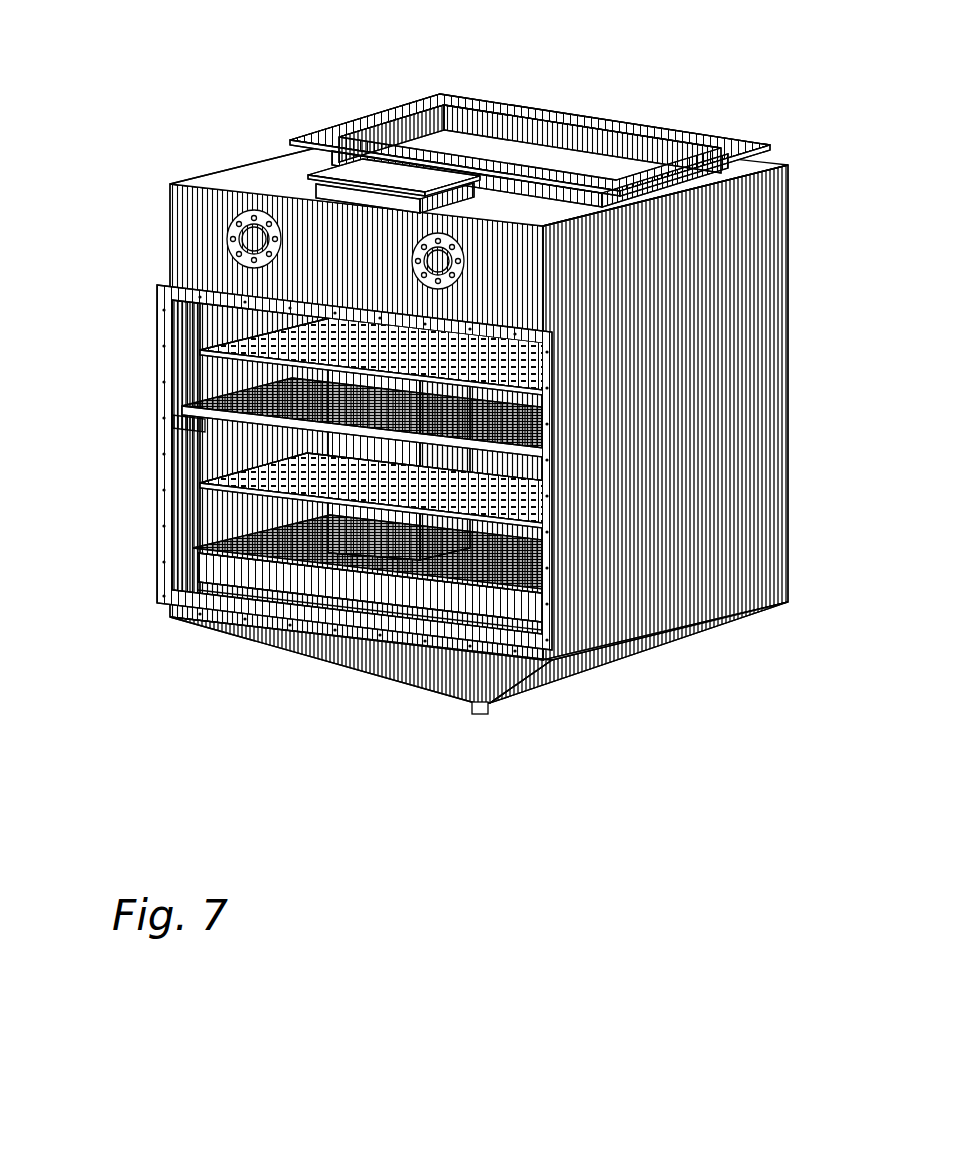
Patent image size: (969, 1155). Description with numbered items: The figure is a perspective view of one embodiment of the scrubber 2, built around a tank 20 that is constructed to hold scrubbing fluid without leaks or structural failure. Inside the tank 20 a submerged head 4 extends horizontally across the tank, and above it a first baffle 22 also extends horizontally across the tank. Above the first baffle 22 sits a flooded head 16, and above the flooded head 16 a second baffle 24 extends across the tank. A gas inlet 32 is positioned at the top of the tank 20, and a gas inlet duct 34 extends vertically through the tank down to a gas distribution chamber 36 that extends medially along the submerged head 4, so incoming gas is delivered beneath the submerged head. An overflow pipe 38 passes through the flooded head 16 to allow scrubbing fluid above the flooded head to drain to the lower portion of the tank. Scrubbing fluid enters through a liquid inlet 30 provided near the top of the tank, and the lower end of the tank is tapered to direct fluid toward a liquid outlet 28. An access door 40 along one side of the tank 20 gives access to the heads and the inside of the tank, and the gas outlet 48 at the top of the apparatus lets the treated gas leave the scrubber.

The oven apparatus 2 is at (437, 383).
The submerged head 4 is at (190, 548).
The flooded head 16 is at (202, 400).
The tank 20 is at (185, 222).
The first baffle 22 is at (215, 485).
The second baffle 24 is at (235, 333).
The liquid outlet 28 is at (486, 712).
The liquid inlet 30 is at (241, 239).
The gas inlet 32 is at (470, 187).
The gas inlet duct 34 is at (412, 392).
The gas distribution chamber 36 is at (545, 548).
The overflow pipe 38 is at (555, 404).
The access door 40 is at (186, 447).
The gas outlet 48 is at (556, 152).